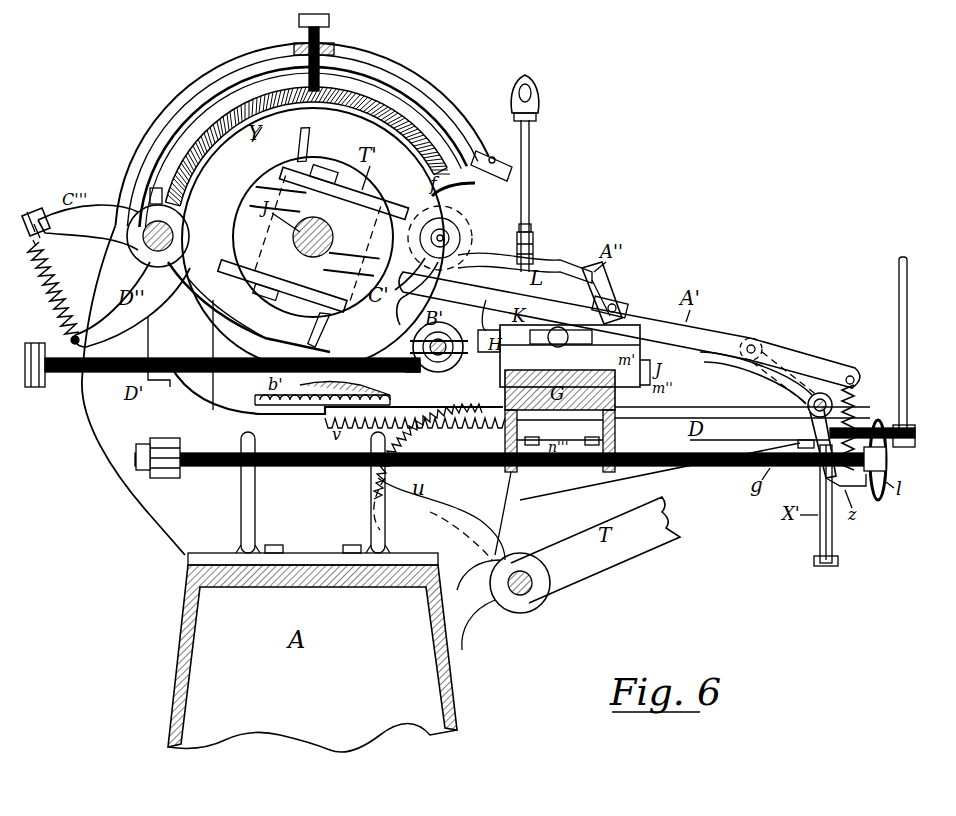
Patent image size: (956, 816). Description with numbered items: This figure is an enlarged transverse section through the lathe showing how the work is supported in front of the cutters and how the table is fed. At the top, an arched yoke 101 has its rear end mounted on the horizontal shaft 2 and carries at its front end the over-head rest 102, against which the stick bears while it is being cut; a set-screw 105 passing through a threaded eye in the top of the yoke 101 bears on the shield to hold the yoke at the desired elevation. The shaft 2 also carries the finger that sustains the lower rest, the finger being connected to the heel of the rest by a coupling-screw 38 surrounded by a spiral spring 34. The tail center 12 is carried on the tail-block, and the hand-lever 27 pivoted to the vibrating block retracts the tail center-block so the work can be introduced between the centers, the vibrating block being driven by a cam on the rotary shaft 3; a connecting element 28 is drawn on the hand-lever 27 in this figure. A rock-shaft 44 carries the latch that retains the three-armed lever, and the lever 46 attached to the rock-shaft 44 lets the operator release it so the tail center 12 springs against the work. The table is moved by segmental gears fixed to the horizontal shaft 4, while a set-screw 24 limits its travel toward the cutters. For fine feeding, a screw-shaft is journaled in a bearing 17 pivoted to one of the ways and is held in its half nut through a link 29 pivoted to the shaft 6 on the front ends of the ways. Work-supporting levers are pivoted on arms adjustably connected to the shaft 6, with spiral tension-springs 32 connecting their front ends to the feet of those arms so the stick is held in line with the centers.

The set-screw 105 is at (320, 38).
The arched yoke 101 is at (424, 92).
The over-head rest 102 is at (470, 192).
The tail center 12 is at (450, 240).
The hand-lever 27 is at (531, 200).
The clamp 28 is at (535, 246).
The coupling-screw 38 is at (28, 217).
The horizontal shaft 2 is at (152, 230).
The spiral spring 34 is at (46, 292).
The set-screw 24 is at (66, 373).
The bearing 17 is at (180, 476).
The rotary shaft 3 is at (410, 364).
The lever 46 is at (907, 332).
The spiral tension-springs 32 is at (851, 402).
The rock-shaft 44 is at (858, 428).
The shaft 6 is at (808, 400).
The link 29 is at (834, 535).
The horizontal shaft 4 is at (518, 598).